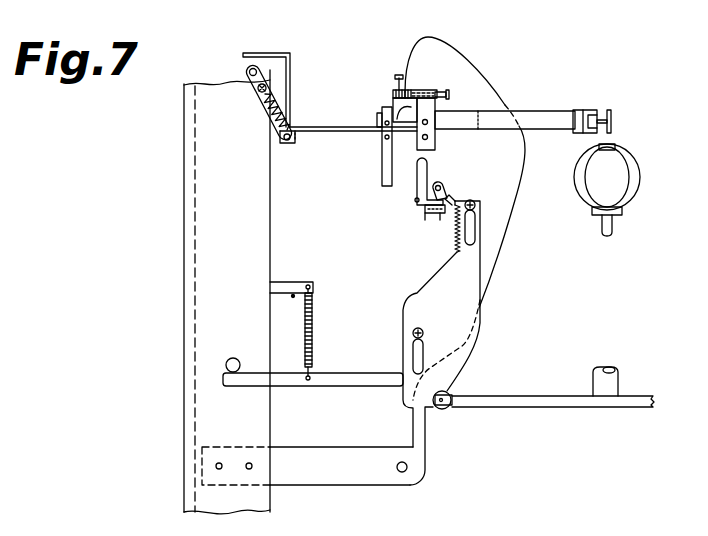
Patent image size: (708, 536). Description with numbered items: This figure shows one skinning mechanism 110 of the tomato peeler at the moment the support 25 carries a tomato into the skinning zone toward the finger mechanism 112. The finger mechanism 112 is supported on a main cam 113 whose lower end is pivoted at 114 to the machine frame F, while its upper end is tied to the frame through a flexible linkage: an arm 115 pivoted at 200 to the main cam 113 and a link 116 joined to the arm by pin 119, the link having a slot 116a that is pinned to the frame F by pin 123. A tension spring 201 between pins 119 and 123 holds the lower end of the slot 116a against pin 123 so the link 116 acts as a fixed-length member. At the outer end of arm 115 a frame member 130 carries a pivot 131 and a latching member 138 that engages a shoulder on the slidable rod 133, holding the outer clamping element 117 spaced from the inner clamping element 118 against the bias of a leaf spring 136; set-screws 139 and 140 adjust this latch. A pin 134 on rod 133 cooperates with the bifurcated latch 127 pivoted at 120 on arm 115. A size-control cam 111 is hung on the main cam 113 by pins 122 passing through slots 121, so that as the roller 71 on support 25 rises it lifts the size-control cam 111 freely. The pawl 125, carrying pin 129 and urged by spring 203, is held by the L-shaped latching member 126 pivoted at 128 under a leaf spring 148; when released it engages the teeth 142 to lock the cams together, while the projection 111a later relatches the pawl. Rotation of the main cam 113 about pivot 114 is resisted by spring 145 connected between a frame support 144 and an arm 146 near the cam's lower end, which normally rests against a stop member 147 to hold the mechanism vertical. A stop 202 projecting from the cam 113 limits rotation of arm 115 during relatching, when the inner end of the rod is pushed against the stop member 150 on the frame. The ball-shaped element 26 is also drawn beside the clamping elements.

The machine frame F is at (184, 285).
The stop member 150 is at (258, 53).
The link 116 is at (277, 132).
The slot 116a is at (250, 70).
The pin 123 is at (258, 92).
The tension spring 201 is at (270, 113).
The pin 119 is at (288, 144).
The arm 115 is at (317, 138).
The latch 127 is at (383, 165).
The pivot 120 is at (384, 136).
The slidable rod member 133 is at (385, 121).
The pin 134 is at (383, 110).
The frame member 130 is at (422, 92).
The set-screw 140 is at (398, 85).
The set-screw 139 is at (446, 93).
The latching member 138 is at (418, 90).
The stop 202 is at (408, 88).
The pivot 131 is at (428, 121).
The pivot 200 is at (428, 138).
The finger mechanism 112 is at (557, 115).
The leaf spring 136 is at (478, 111).
The inner clamping element 118 is at (590, 110).
The outer clamping element 117 is at (612, 122).
The ball 26 is at (622, 212).
The L-shaped latching member 126 is at (417, 173).
The pivot 128 is at (415, 201).
The leaf spring 148 is at (425, 210).
The spring 203 is at (428, 214).
The pawl 125 is at (440, 183).
The pin 129 is at (448, 198).
The main cam 113 is at (492, 265).
The teeth 142 is at (461, 247).
The projection 111a is at (448, 200).
The pins 122 is at (476, 206).
The slots 121 is at (476, 224).
The size-control cam 111 is at (467, 360).
The roller 71 is at (449, 407).
The pivot 114 is at (413, 472).
The support 25 is at (567, 402).
The support 144 is at (287, 282).
The spring 145 is at (313, 328).
The arm 146 is at (330, 383).
The stop member 147 is at (233, 357).
The skinning mechanism 110 is at (603, 294).